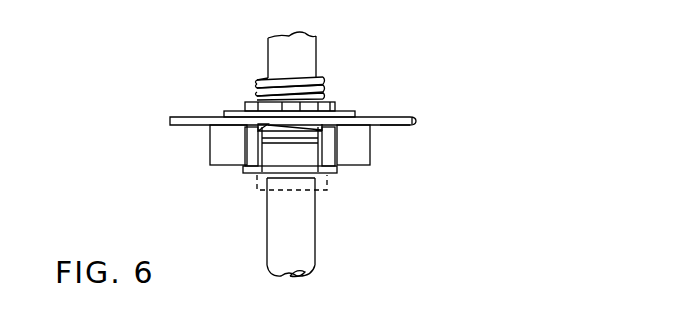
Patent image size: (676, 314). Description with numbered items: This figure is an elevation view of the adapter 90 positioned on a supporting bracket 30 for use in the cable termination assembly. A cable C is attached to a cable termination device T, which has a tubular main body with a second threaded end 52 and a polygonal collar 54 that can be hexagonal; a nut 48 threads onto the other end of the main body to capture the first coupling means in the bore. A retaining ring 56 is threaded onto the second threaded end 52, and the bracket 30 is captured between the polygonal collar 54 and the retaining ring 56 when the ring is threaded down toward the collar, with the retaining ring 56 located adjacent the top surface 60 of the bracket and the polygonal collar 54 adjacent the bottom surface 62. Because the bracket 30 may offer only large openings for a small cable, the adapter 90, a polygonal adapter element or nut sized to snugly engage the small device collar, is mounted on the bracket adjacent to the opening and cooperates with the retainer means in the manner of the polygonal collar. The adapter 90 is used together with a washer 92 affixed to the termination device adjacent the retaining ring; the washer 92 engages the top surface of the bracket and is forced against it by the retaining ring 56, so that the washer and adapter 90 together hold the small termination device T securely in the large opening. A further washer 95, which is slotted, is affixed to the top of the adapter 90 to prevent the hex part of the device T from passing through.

The second threaded end 52 is at (320, 82).
The retaining ring 56 is at (333, 102).
The washer 92 is at (356, 112).
The top surface 60 is at (402, 117).
The bottom surface 62 is at (412, 126).
The supporting bracket 30 is at (408, 125).
The polygonal collar 54 is at (360, 158).
The nut 48 is at (292, 163).
The further washer 95 is at (327, 181).
The adapter 90 is at (188, 151).
The cable termination device T is at (250, 182).
The cable C is at (308, 249).